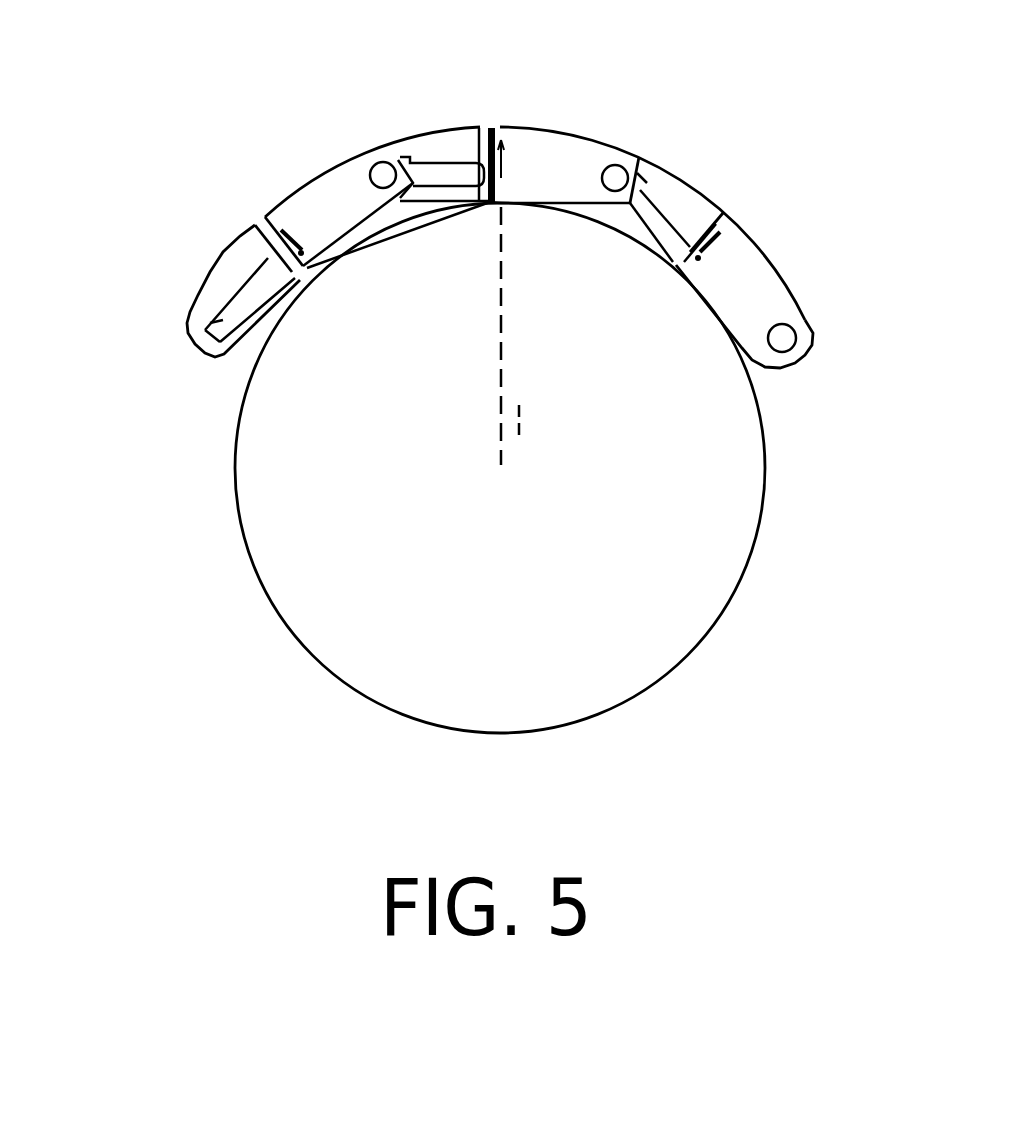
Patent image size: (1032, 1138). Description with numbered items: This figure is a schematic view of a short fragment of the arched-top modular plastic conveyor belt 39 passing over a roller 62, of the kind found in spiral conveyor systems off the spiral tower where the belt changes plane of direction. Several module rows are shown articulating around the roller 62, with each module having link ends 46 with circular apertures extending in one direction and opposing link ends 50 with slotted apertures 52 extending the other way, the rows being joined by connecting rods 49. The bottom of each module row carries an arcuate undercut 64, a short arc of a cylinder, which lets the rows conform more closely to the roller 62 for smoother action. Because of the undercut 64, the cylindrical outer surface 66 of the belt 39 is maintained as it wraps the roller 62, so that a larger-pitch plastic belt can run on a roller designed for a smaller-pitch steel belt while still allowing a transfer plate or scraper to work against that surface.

The conveyor belt 39 is at (479, 201).
The cylindrical outer surface 66 is at (453, 120).
The link ends 50 is at (174, 296).
The slotted apertures 52 is at (188, 325).
The link ends 46 is at (793, 300).
The connecting rods 49 is at (783, 340).
The roller 62 is at (607, 568).
The arcuate undercut 64 is at (495, 205).